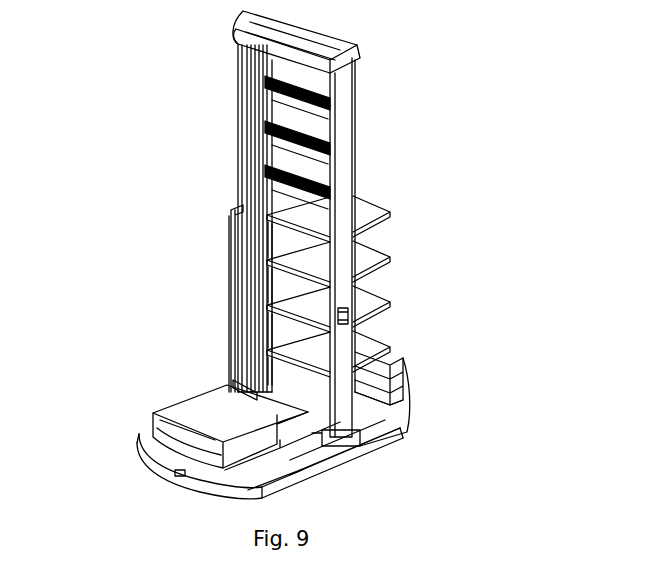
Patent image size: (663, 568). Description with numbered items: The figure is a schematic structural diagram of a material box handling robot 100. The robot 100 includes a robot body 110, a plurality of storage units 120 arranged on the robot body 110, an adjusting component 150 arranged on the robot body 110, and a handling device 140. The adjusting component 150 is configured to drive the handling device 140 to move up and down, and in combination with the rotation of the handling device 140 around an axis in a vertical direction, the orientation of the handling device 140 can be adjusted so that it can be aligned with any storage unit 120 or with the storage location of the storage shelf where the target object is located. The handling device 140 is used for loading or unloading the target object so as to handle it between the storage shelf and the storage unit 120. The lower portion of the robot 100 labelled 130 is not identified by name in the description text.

The material box handling robot 100 is at (276, 255).
The robot body 110 is at (350, 275).
The storage unit 120 is at (377, 372).
The mobile base 130 is at (340, 458).
The handling device 140 is at (160, 445).
The adjusting component 150 is at (232, 276).